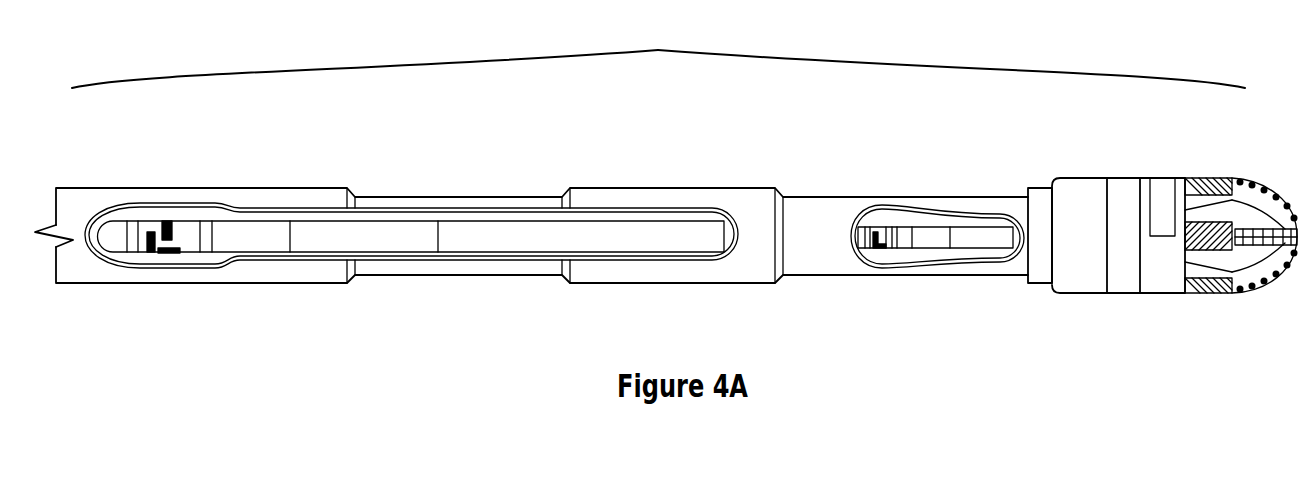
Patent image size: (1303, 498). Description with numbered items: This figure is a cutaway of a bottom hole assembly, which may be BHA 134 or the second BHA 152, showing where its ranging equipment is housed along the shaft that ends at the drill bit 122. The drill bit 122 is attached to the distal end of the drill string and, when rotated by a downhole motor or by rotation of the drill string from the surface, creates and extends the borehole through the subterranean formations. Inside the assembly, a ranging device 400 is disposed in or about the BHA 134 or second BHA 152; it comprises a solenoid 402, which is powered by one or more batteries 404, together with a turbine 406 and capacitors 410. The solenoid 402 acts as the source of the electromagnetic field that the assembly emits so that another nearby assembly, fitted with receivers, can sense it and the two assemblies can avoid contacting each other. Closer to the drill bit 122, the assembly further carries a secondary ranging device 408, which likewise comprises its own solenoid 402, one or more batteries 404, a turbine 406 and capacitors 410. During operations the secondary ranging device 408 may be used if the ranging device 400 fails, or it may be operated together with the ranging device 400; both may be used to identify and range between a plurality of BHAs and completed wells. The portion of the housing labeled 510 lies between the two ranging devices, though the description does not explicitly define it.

The drill bit 122 is at (1230, 177).
The BHA 134 is at (367, 54).
The second BHA 152 is at (951, 54).
The ranging device 400 is at (525, 283).
The solenoid 402 is at (515, 233).
The batteries 404 is at (353, 242).
The turbine 406 is at (190, 243).
The secondary ranging device 408 is at (913, 260).
The capacitors 410 is at (233, 218).
The housing section 510 is at (753, 255).